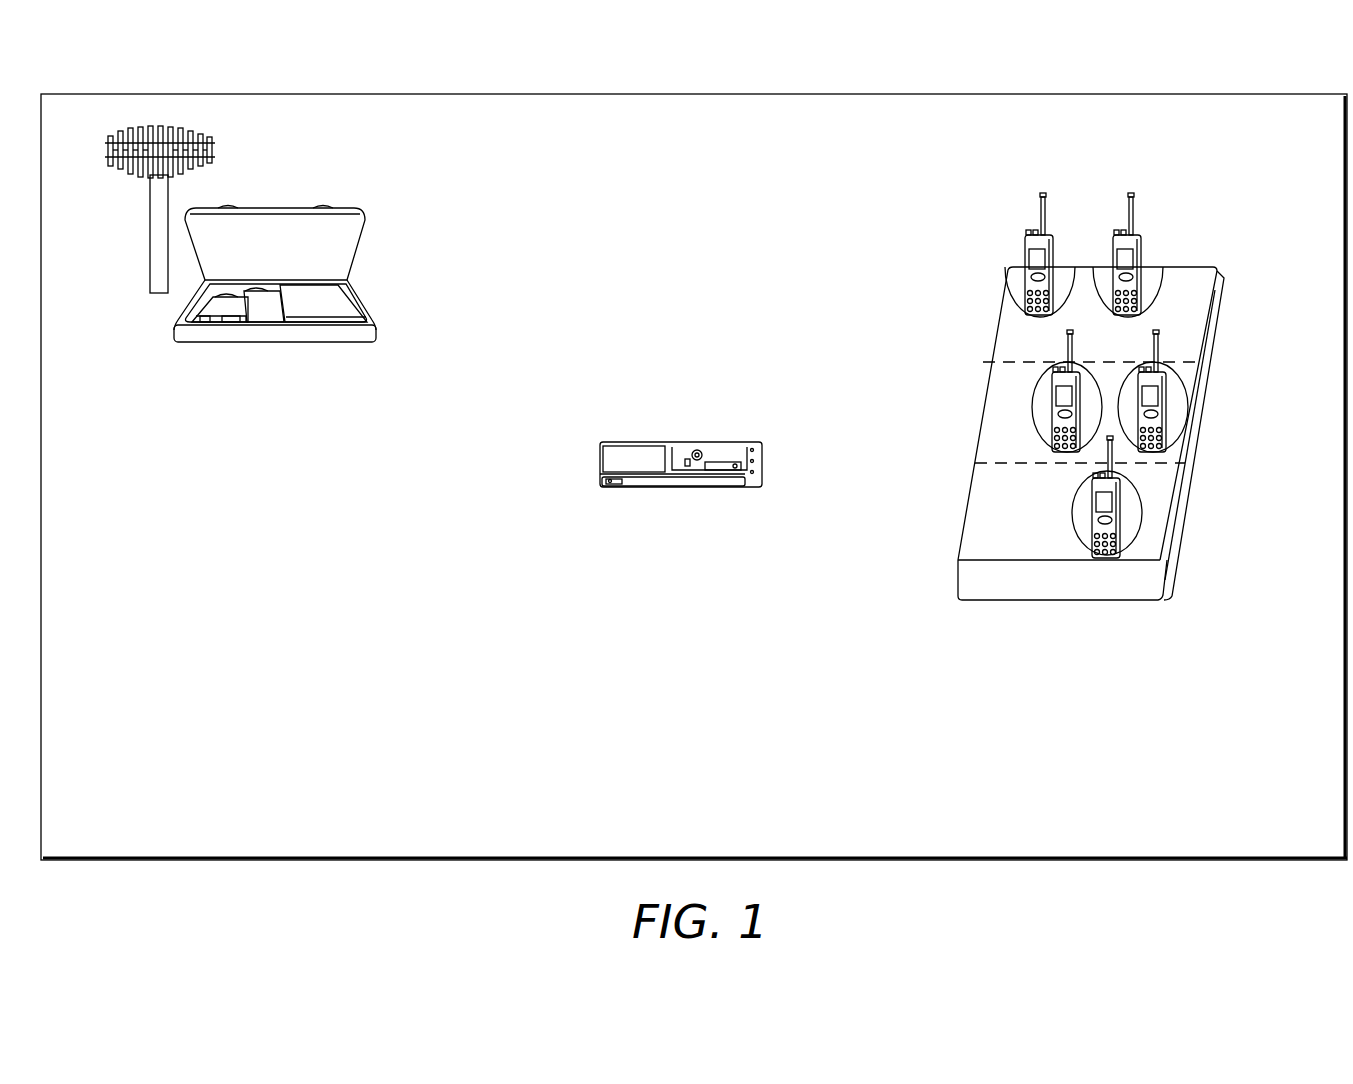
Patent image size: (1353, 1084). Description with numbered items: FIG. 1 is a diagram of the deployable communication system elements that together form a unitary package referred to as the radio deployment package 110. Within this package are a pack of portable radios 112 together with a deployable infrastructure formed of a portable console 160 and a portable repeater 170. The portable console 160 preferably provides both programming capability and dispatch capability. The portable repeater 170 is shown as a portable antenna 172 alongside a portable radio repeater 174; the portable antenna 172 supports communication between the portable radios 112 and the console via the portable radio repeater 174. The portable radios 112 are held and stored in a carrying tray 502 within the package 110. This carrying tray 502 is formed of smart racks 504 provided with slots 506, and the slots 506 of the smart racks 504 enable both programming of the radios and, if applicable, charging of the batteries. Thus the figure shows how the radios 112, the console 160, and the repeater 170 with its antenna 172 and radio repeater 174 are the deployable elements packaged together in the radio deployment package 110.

The radio deployment package 110 is at (1318, 93).
The portable repeater 170 is at (430, 173).
The portable antenna 172 is at (148, 223).
The portable radio repeater 174 is at (273, 207).
The portable console 160 is at (802, 399).
The portable radios 112 is at (1167, 212).
The carrying tray 502 is at (985, 380).
The smart racks 504 is at (996, 330).
The slots 506 is at (1074, 275).